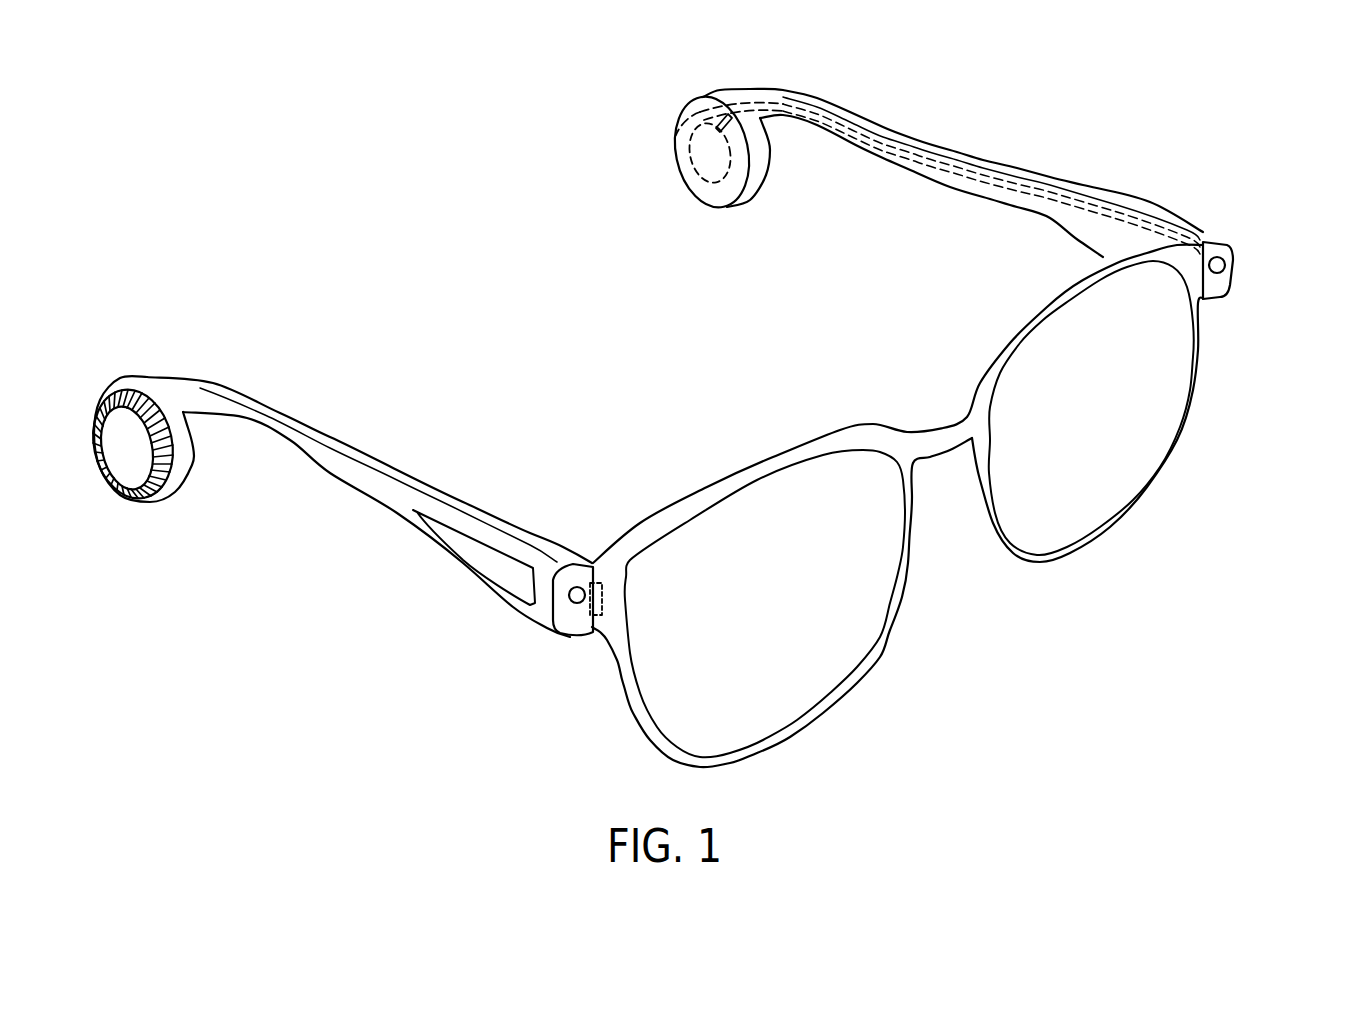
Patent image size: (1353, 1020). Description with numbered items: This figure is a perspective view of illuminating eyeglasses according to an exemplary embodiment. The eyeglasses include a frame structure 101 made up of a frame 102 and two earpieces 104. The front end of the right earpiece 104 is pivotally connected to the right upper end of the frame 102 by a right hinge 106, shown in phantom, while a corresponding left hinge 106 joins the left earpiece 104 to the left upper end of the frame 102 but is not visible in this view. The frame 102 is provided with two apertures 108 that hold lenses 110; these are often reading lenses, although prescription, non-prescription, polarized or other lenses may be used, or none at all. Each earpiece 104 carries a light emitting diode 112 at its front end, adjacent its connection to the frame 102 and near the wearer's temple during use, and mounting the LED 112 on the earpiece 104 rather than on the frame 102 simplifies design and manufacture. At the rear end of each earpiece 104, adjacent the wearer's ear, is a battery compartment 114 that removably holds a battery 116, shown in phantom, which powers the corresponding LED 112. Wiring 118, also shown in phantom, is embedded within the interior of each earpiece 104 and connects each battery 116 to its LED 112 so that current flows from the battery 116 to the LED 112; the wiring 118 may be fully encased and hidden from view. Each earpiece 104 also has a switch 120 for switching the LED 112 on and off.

The frame structure 101 is at (1168, 579).
The frame 102 is at (733, 470).
The earpiece 104 is at (350, 487).
The hinge 106 is at (592, 625).
The aperture 108 is at (853, 653).
The lens 110 is at (1064, 474).
The light emitting diode (LED) 112 is at (578, 592).
The battery compartment 114 is at (123, 447).
The battery 116 is at (694, 114).
The wiring 118 is at (1047, 197).
The switch 120 is at (488, 572).